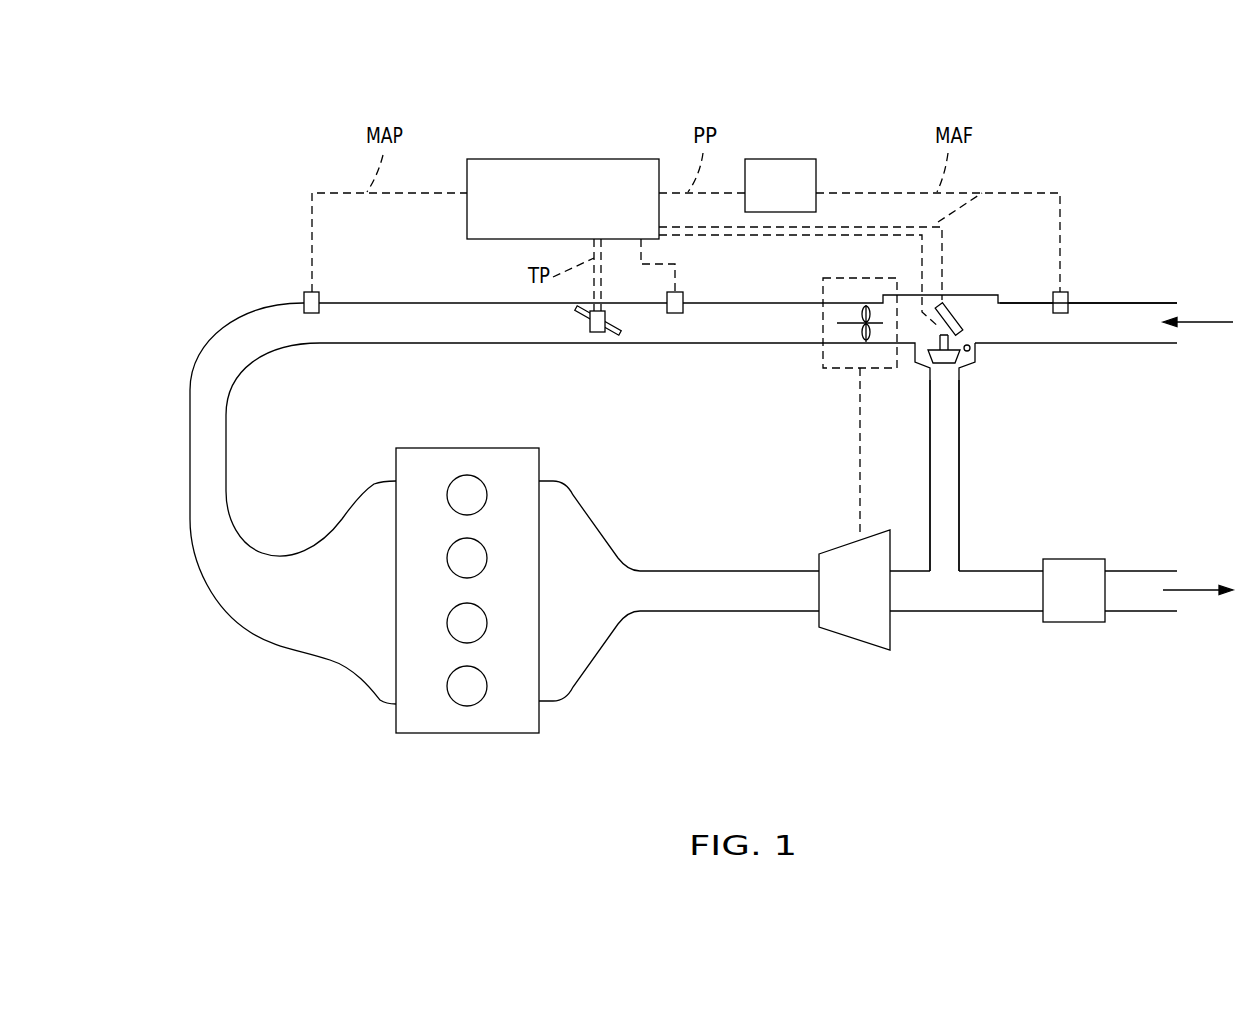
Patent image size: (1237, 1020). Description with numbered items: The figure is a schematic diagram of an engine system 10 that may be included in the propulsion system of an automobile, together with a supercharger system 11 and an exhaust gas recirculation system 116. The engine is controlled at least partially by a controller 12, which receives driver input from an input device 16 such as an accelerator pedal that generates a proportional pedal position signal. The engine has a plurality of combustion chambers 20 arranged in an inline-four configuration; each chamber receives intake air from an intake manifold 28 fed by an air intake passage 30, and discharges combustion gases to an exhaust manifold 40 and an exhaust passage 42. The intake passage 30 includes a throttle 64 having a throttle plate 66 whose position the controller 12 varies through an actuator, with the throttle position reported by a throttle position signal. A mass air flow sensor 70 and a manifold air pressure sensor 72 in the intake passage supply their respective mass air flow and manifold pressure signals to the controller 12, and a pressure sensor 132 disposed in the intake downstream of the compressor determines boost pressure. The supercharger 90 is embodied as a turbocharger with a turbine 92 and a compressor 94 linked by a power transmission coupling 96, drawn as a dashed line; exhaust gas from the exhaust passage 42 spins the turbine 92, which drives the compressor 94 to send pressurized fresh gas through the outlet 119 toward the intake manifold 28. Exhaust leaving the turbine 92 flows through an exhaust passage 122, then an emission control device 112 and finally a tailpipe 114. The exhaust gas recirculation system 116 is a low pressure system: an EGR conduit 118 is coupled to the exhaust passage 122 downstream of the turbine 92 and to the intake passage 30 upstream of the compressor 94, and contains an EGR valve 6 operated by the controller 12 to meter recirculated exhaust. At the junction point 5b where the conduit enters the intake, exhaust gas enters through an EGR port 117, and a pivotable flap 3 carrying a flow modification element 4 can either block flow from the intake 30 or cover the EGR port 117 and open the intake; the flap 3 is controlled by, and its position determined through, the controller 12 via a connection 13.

The engine system 10 is at (230, 126).
The supercharger system 11 is at (906, 122).
The controller 12 is at (573, 159).
The input device 16 is at (777, 158).
The connection 13 is at (980, 193).
The manifold air pressure sensor 72 is at (304, 296).
The pressure sensor 132 is at (683, 295).
The throttle 64 is at (618, 322).
The throttle plate 66 is at (587, 313).
The outlet 119 is at (803, 336).
The compressor 94 is at (820, 366).
The supercharger 90 is at (803, 397).
The power transmission coupling 96 is at (853, 462).
The flow modification element 4 is at (945, 308).
The flap 3 is at (960, 312).
The EGR valve 6 is at (930, 367).
The junction point 5b is at (962, 368).
The EGR port 117 is at (945, 413).
The exhaust gas recirculation system 116 is at (1010, 470).
The EGR conduit 118 is at (959, 530).
The mass air flow sensor 70 is at (1067, 291).
The air intake passage 30 is at (1111, 312).
The combustion chambers 20 is at (467, 488).
The intake manifold 28 is at (366, 602).
The exhaust manifold 40 is at (583, 601).
The exhaust passage 42 is at (735, 593).
The turbine 92 is at (893, 640).
The exhaust passage 122 is at (947, 587).
The emission control device 112 is at (1068, 623).
The tailpipe 114 is at (1147, 571).